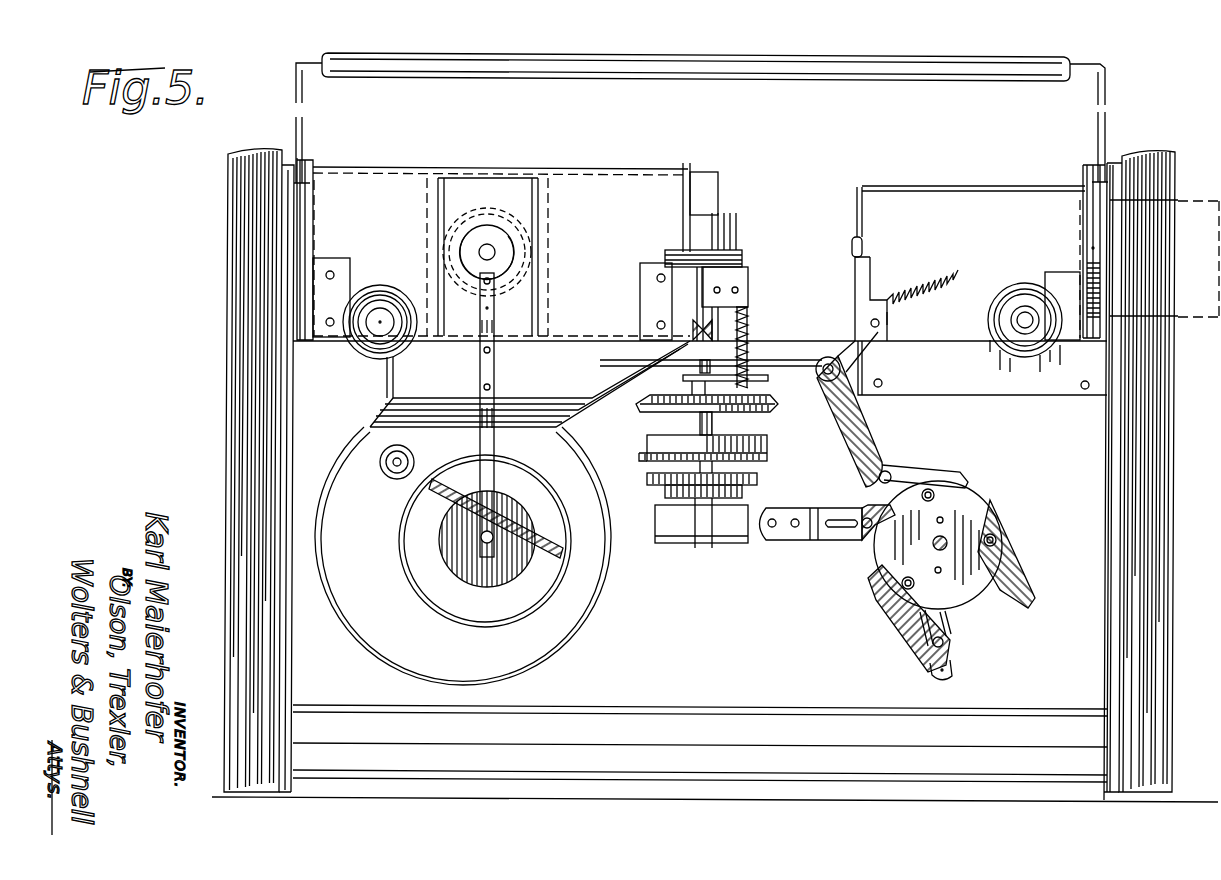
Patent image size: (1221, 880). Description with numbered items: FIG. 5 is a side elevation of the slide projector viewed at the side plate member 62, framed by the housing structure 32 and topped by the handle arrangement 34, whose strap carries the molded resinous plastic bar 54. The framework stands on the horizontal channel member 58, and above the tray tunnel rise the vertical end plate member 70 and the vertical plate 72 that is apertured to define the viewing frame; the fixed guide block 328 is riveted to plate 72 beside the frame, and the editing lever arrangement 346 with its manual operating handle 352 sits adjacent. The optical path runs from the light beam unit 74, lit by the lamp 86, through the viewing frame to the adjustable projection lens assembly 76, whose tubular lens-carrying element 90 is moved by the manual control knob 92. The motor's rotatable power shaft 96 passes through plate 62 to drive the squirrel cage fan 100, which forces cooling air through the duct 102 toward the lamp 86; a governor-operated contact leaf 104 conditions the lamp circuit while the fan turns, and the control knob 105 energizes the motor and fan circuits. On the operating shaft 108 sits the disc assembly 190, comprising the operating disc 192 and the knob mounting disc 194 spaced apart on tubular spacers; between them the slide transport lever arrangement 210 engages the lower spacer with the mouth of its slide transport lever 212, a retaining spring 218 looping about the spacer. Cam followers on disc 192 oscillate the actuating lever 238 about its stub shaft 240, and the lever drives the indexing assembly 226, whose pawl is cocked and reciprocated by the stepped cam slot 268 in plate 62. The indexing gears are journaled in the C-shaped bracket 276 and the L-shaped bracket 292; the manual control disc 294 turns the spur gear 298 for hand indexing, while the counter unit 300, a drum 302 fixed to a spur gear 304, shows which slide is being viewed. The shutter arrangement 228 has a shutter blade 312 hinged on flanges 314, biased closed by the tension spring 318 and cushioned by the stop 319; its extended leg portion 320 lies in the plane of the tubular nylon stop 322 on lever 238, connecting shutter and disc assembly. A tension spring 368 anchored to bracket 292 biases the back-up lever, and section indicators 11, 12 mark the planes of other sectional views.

The section line 11- 11 is at (640, 485).
The section line 12- 12 is at (628, 422).
The housing structure 32 is at (228, 177).
The handle arrangement 34 is at (1112, 78).
The resinous plastic bar 54 is at (812, 78).
The horizontal channel member 58 is at (925, 760).
The side plate member 62 is at (345, 381).
The end plate member 70 is at (310, 212).
The vertical plate 72 is at (690, 165).
The light beam unit 74 is at (380, 170).
The projection lens assembly 76 is at (1002, 185).
The lamp 86 is at (500, 222).
The lens-carrying element 90 is at (1192, 195).
The manual control knob 92 is at (1018, 290).
The power shaft 96 is at (485, 537).
The squirrel cage fan 100 is at (582, 614).
The duct 102 is at (400, 388).
The contact leaf 104 is at (492, 448).
The control knob 105 is at (376, 300).
The operating shaft 108 is at (948, 540).
The disc assembly 190 is at (1002, 592).
The operating disc 192 is at (1018, 560).
The knob mounting disc 194 is at (1020, 560).
The slide transport lever arrangement 210 is at (960, 653).
The slide transport lever 212 is at (905, 628).
The retaining spring 218 is at (948, 674).
The indexing assembly 226 is at (790, 542).
The shutter arrangement 228 is at (900, 315).
The actuating lever 238 is at (882, 432).
The stub shaft 240 is at (892, 470).
The stepped cam slot 268 is at (762, 540).
The C-shaped bracket 276 is at (668, 548).
The L-shaped bracket 292 is at (768, 378).
The manual control disc 294 is at (815, 400).
The spur gear 298 is at (745, 492).
The counter unit 300 is at (772, 452).
The drum 302 is at (648, 441).
The spur gear 304 is at (760, 476).
The shutter blade 312 is at (853, 262).
The flanges 314 is at (868, 280).
The tension spring 318 is at (935, 276).
The stop 319 is at (856, 232).
The extended leg portion 320 is at (862, 360).
The tubular nylon stop 322 is at (828, 355).
The guide block 328 is at (706, 175).
The editing lever arrangement 346 is at (750, 248).
The manual operating handle 352 is at (665, 262).
The tension spring 368 is at (748, 318).